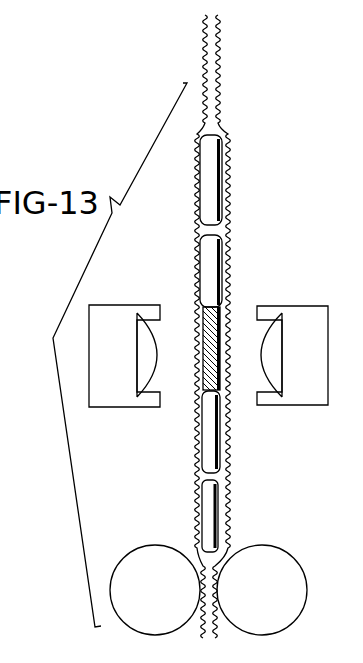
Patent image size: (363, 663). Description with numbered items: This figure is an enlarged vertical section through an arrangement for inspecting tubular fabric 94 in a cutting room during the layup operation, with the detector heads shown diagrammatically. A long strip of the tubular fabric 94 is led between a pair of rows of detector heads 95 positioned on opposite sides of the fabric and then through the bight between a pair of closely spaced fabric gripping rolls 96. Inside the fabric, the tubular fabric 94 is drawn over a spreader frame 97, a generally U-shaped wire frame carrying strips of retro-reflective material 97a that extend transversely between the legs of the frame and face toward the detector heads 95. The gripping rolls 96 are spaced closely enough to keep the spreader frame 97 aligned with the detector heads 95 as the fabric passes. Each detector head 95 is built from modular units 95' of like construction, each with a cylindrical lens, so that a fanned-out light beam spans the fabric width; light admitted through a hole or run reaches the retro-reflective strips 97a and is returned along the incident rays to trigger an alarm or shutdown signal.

The tubular fabric 94 is at (232, 63).
The spreader frame 97 is at (225, 249).
The strips of retro-reflective material 97a is at (197, 333).
The detector heads 95 is at (124, 336).
The modular units 95' is at (297, 339).
The fabric gripping rolls 96 is at (140, 545).